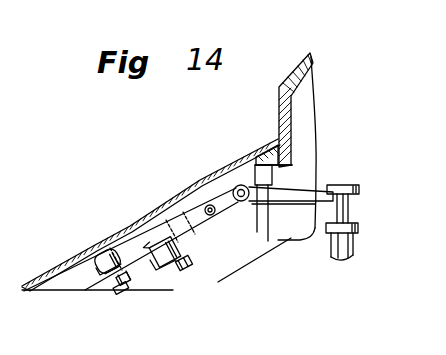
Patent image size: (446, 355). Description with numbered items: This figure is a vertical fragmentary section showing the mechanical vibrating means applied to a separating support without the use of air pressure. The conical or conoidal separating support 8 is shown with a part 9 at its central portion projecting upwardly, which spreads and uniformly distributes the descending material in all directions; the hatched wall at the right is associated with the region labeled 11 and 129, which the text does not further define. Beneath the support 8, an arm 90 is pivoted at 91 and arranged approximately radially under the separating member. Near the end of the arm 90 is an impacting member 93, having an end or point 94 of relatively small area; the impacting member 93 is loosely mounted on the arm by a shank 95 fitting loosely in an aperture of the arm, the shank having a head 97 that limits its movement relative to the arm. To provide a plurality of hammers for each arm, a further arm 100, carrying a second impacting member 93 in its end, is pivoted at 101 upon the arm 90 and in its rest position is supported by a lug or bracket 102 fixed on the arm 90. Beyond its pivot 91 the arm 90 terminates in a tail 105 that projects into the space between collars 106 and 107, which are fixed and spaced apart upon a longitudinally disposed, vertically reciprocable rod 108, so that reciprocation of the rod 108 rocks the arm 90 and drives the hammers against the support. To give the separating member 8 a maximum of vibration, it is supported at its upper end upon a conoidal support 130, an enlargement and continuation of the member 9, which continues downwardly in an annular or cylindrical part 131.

The conical or conoidal support 8 is at (145, 216).
The part 9 is at (279, 101).
The wall 11 is at (295, 67).
The arm 90 is at (168, 232).
The pivot 91 is at (238, 186).
The impacting member 93 is at (98, 272).
The end or point 94 is at (108, 249).
The shank 95 is at (110, 287).
The head 97 is at (117, 291).
The arm 100 is at (226, 280).
The pivot 101 is at (214, 216).
The lug or bracket 102 is at (193, 233).
The tail 105 is at (284, 201).
The collar 106 is at (367, 183).
The collar 107 is at (359, 228).
The rod 108 is at (341, 257).
The wedge block 129 is at (267, 148).
The conoidal support 130 is at (283, 166).
The annular or cylindrical part 131 is at (268, 241).